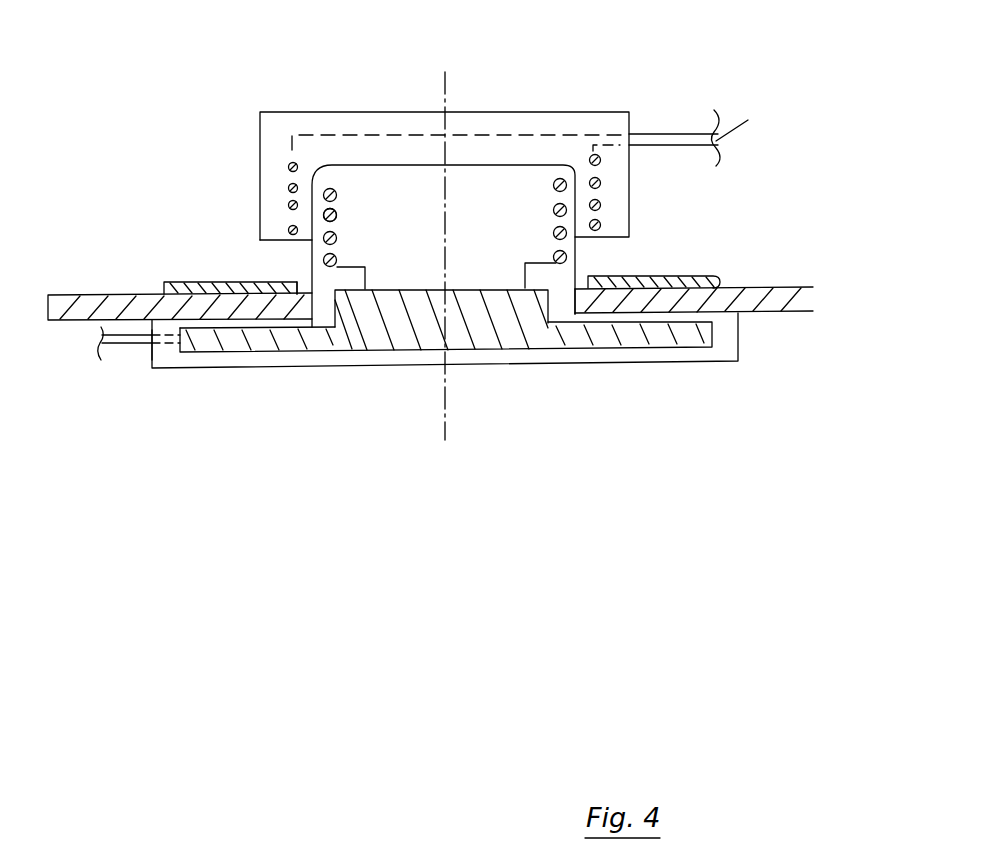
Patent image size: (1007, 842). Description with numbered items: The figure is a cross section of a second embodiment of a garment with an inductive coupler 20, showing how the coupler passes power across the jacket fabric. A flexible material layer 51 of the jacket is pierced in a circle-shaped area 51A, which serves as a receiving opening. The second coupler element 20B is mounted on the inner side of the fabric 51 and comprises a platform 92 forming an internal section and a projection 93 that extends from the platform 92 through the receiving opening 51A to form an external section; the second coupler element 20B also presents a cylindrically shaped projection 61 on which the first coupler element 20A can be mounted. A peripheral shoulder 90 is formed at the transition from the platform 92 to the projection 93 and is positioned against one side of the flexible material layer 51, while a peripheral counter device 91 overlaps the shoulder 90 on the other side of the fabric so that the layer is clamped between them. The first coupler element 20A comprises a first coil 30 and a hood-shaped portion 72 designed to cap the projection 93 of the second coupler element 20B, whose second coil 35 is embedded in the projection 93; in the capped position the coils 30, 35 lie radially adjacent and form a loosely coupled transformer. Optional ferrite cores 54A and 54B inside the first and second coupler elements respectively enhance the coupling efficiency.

The inductive coupler 20 is at (463, 28).
The first coupler element 20A is at (255, 132).
The second coupler element 20B is at (392, 373).
The first coil 30 is at (285, 183).
The second coil 35 is at (330, 215).
The flexible material layer 51 is at (790, 305).
The circle-shaped area 51A is at (580, 285).
The ferrite core 54A is at (387, 202).
The ferrite core 54B is at (527, 122).
The cylindrically shaped projection 61 is at (482, 230).
The hood-shaped portion 72 is at (638, 107).
The peripheral shoulder 90 is at (150, 323).
The peripheral counter device 91 is at (162, 272).
The platform 92 is at (145, 352).
The projection 93 is at (310, 255).